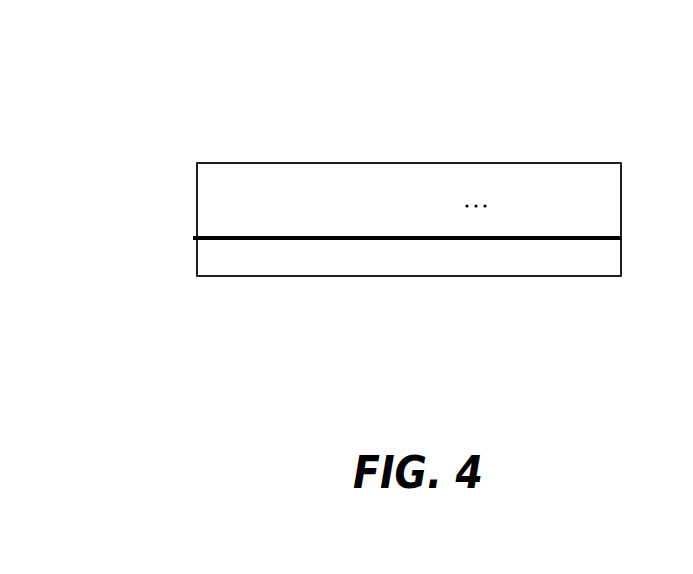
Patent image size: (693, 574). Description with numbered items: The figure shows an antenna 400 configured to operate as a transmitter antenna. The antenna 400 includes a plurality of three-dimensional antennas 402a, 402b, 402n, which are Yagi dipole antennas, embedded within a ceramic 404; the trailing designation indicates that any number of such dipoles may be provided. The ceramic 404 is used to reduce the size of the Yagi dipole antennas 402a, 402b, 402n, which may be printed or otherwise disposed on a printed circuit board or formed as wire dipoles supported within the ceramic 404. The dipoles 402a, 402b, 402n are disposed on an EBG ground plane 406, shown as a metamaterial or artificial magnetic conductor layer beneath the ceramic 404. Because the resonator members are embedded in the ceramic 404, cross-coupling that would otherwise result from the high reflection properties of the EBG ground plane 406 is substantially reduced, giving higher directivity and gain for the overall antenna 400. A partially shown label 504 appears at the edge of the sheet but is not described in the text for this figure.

The antenna 400 is at (233, 103).
The 3D antenna 402a is at (277, 180).
The 3D antenna 402b is at (403, 179).
The 3D antenna 402n is at (568, 182).
The ceramic 404 is at (216, 217).
The EBG ground plane 406 is at (334, 267).
The element 504 is at (614, 180).